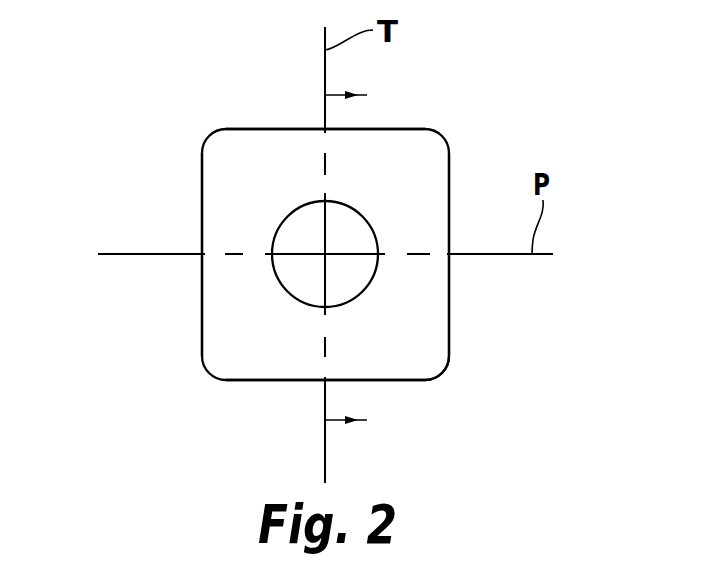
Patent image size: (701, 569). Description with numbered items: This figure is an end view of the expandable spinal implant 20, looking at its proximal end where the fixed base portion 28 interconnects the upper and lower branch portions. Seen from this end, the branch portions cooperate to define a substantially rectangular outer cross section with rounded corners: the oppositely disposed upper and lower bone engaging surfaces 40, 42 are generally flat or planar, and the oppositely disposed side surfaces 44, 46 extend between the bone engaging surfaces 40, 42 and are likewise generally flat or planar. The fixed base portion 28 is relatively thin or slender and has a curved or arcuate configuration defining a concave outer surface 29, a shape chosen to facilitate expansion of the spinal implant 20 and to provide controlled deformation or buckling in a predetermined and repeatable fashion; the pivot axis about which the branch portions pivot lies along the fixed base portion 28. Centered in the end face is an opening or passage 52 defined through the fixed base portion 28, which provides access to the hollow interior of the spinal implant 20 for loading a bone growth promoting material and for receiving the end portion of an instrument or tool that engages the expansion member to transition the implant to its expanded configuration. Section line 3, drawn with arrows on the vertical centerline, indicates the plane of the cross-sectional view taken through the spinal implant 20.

The section line of FIG. 3 is at (329, 259).
The spinal implant 20 is at (421, 93).
The upper bone engaging surface 40 is at (426, 128).
The lower bone engaging surface 42 is at (382, 380).
The side surface 44 is at (449, 231).
The side surface 46 is at (202, 285).
The fixed base portion 28 is at (425, 339).
The concave outer surface 29 is at (410, 303).
The opening or passage 52 is at (283, 222).